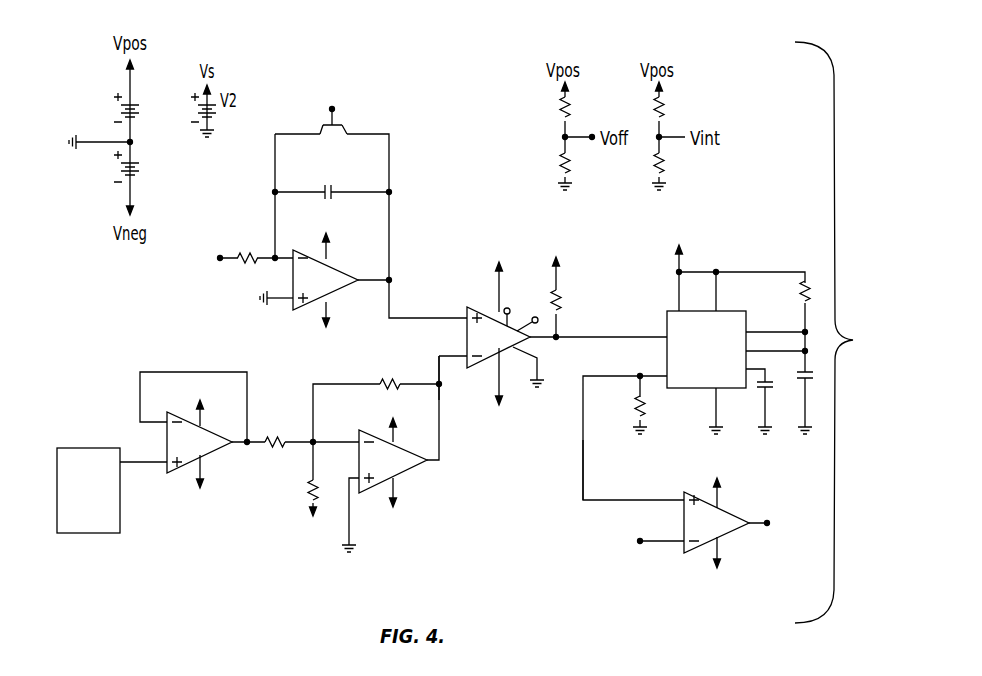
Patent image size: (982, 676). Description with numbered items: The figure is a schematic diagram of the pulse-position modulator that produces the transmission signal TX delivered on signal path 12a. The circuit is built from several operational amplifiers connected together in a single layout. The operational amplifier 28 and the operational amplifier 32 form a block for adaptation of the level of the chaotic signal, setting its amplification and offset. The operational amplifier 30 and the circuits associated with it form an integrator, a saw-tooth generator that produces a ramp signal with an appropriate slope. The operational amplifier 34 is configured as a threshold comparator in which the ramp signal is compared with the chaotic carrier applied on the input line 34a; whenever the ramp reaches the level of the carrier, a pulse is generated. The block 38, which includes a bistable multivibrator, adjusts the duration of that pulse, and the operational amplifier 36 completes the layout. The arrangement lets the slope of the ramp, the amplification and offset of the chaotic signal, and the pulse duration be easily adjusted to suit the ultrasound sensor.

The signal path 12a is at (583, 480).
The operational amplifier 28 is at (172, 473).
The operational amplifier 30 is at (297, 310).
The operational amplifier 32 is at (405, 473).
The operational amplifier 34 is at (481, 307).
The input line 34a is at (441, 371).
The operational amplifier 36 is at (688, 553).
The multivibrator 38 is at (732, 311).